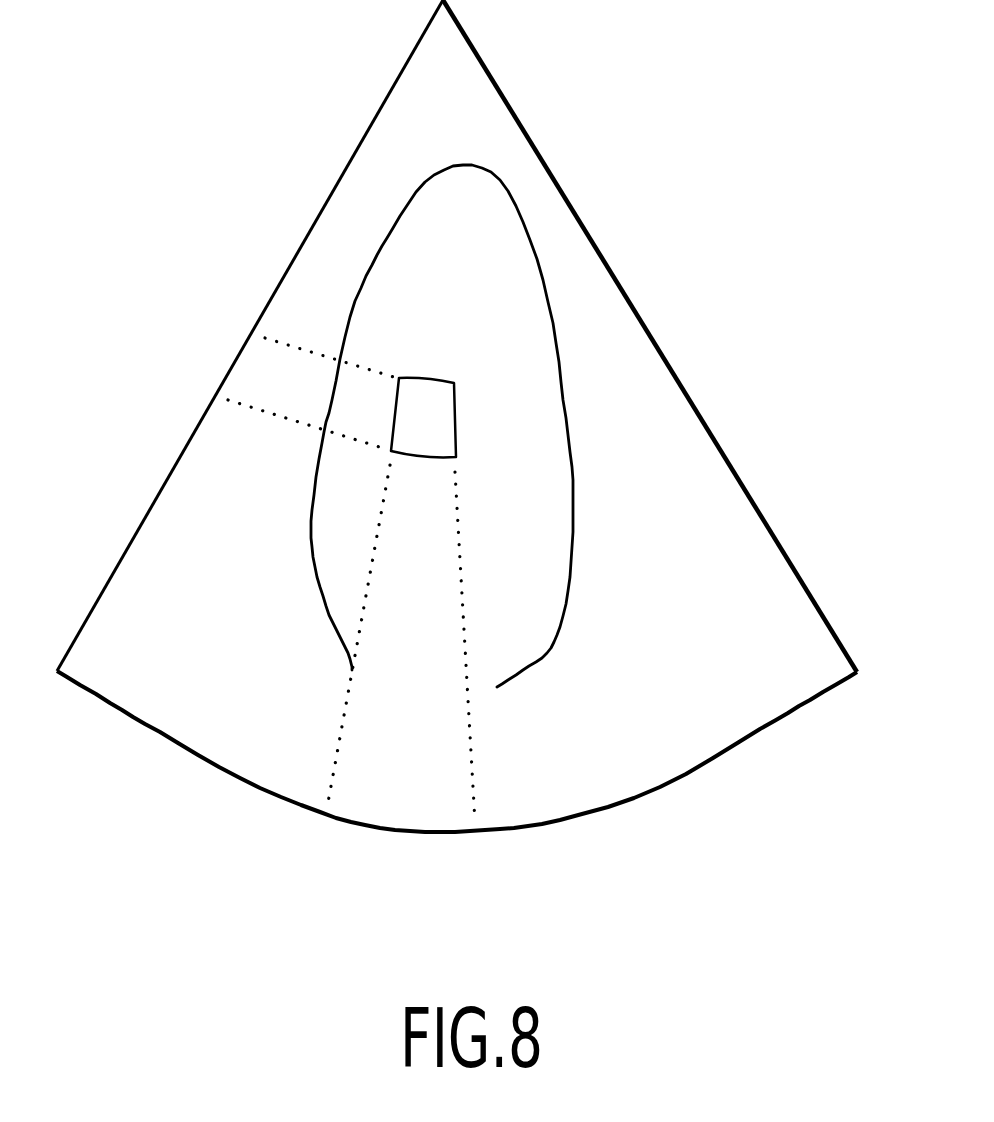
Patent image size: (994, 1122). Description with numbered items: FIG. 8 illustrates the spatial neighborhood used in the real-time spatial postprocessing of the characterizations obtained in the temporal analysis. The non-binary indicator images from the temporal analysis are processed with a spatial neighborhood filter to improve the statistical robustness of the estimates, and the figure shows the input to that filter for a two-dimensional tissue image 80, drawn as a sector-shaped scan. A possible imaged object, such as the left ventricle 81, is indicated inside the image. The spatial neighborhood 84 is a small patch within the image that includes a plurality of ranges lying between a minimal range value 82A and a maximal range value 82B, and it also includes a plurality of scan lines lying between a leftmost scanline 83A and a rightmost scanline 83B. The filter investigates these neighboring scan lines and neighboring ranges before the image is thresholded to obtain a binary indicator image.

The 2D tissue image 80 is at (350, 132).
The left ventricle 81 is at (382, 222).
The minimal range value 82A is at (243, 325).
The maximal range value 82B is at (207, 384).
The leftmost scanline 83A is at (321, 828).
The rightmost scanline 83B is at (475, 848).
The spatial neighborhood 84 is at (427, 419).